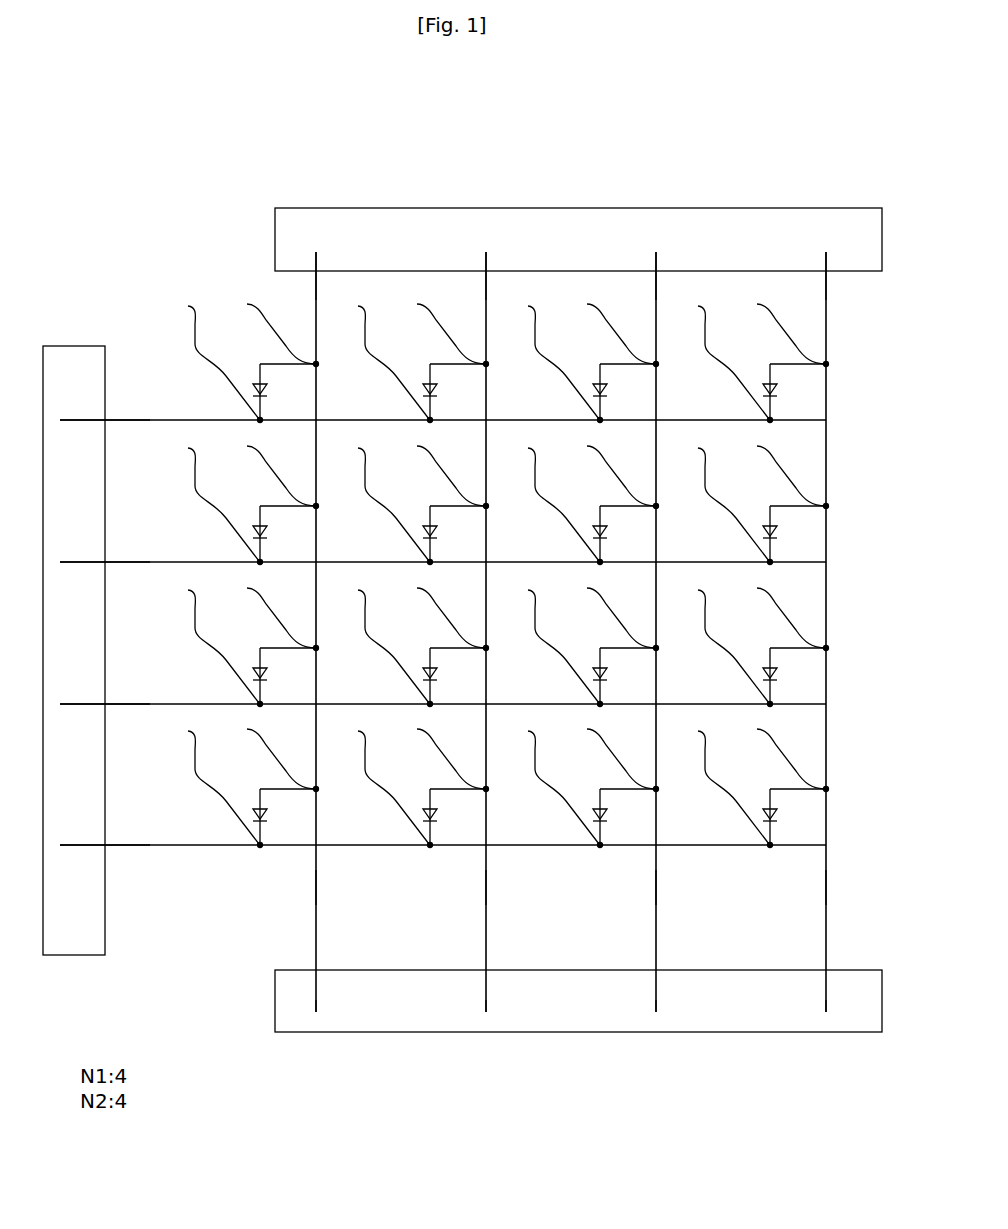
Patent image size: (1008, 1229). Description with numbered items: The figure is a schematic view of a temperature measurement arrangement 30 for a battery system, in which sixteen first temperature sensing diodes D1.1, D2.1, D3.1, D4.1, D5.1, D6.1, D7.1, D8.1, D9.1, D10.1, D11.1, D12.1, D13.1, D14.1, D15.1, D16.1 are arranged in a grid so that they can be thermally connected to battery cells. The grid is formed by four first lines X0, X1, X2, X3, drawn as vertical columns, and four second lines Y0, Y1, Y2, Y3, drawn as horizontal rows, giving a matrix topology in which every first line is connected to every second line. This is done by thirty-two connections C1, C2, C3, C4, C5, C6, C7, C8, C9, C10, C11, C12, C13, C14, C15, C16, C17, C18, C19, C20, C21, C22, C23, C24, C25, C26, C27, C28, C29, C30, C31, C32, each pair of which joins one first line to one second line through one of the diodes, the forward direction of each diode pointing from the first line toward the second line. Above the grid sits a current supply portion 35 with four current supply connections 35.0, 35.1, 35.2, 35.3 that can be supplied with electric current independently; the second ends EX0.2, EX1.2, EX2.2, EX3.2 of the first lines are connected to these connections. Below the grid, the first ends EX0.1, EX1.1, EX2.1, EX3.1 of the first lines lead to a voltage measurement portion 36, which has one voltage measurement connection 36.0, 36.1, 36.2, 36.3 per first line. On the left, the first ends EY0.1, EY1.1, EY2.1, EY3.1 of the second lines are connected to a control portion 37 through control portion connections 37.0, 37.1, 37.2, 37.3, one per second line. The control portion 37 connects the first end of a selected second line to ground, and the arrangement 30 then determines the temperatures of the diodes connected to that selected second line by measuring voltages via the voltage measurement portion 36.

The temperature measurement arrangement 30 is at (122, 130).
The current supply portion 35 is at (265, 246).
The voltage measurement portion 36 is at (265, 992).
The control portion 37 is at (74, 335).
The current supply connection 35.0 is at (341, 254).
The current supply connection 35.1 is at (511, 254).
The current supply connection 35.2 is at (681, 254).
The current supply connection 35.3 is at (851, 254).
The voltage measurement connection 36.0 is at (341, 998).
The voltage measurement connection 36.1 is at (511, 998).
The voltage measurement connection 36.2 is at (681, 998).
The voltage measurement connection 36.3 is at (851, 998).
The control portion connection 37.0 is at (78, 822).
The control portion connection 37.1 is at (78, 681).
The control portion connection 37.2 is at (78, 539).
The control portion connection 37.3 is at (78, 397).
The first line X0 is at (287, 632).
The first line X1 is at (457, 632).
The first line X2 is at (627, 632).
The first line X3 is at (797, 632).
The second line Y0 is at (443, 810).
The second line Y1 is at (443, 669).
The second line Y2 is at (443, 527).
The second line Y3 is at (443, 385).
The first end of first line EX0.1 is at (270, 887).
The first end of first line EX1.1 is at (440, 887).
The first end of first line EX2.1 is at (610, 887).
The first end of first line EX3.1 is at (780, 887).
The second end of first line EX0.2 is at (270, 285).
The second end of first line EX1.2 is at (440, 285).
The second end of first line EX2.2 is at (610, 285).
The second end of first line EX3.2 is at (780, 285).
The first end of second line EY0.1 is at (151, 825).
The first end of second line EY1.1 is at (151, 684).
The first end of second line EY2.1 is at (151, 542).
The first end of second line EY3.1 is at (151, 400).
The connection C1 is at (208, 781).
The connection C2 is at (266, 754).
The connection C3 is at (208, 640).
The connection C4 is at (266, 613).
The connection C5 is at (208, 498).
The connection C6 is at (266, 471).
The connection C7 is at (208, 356).
The connection C8 is at (266, 329).
The connection C9 is at (378, 781).
The connection C10 is at (430, 754).
The connection C11 is at (372, 640).
The connection C12 is at (430, 613).
The connection C13 is at (372, 498).
The connection C14 is at (430, 471).
The connection C15 is at (372, 356).
The connection C16 is at (430, 329).
The connection C17 is at (542, 781).
The connection C18 is at (600, 754).
The connection C19 is at (542, 640).
The connection C20 is at (600, 613).
The connection C21 is at (542, 498).
The connection C22 is at (600, 471).
The connection C23 is at (542, 356).
The connection C24 is at (600, 329).
The connection C25 is at (712, 781).
The connection C26 is at (770, 754).
The connection C27 is at (712, 640).
The connection C28 is at (770, 613).
The connection C29 is at (712, 498).
The connection C30 is at (770, 471).
The connection C31 is at (712, 356).
The connection C32 is at (770, 329).
The first temperature sensing diode D1.1 is at (267, 374).
The first temperature sensing diode D2.1 is at (437, 374).
The first temperature sensing diode D3.1 is at (607, 374).
The first temperature sensing diode D4.1 is at (777, 374).
The first temperature sensing diode D5.1 is at (267, 516).
The first temperature sensing diode D6.1 is at (437, 516).
The first temperature sensing diode D7.1 is at (607, 516).
The first temperature sensing diode D8.1 is at (777, 516).
The first temperature sensing diode D9.1 is at (267, 658).
The first temperature sensing diode D10.1 is at (430, 658).
The first temperature sensing diode D11.1 is at (600, 658).
The first temperature sensing diode D12.1 is at (770, 658).
The first temperature sensing diode D13.1 is at (260, 799).
The first temperature sensing diode D14.1 is at (430, 799).
The first temperature sensing diode D15.1 is at (600, 799).
The first temperature sensing diode D16.1 is at (770, 799).